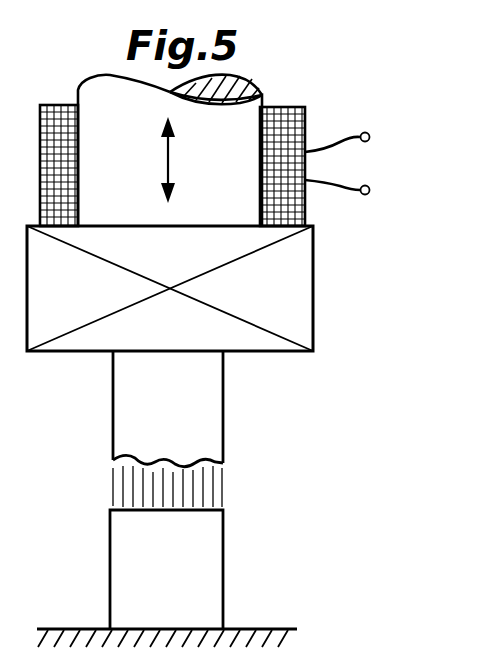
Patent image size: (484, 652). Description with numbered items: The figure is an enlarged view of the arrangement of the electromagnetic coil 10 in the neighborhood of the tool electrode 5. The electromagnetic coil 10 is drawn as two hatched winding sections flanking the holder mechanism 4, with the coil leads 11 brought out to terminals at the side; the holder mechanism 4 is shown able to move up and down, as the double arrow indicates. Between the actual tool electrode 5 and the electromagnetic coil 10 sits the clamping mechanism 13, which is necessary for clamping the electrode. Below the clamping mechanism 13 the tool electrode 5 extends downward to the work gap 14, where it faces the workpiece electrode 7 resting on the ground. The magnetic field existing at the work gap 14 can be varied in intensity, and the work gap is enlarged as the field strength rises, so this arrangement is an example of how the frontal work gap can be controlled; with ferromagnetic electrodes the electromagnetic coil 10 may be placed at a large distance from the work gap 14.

The holder mechanism 4 is at (97, 92).
The electromagnetic coil 10 is at (285, 123).
The coil terminals 11 is at (369, 141).
The clamping mechanism 13 is at (297, 291).
The tool electrode 5 is at (214, 403).
The work gap 14 is at (226, 466).
The base block 7 is at (208, 567).